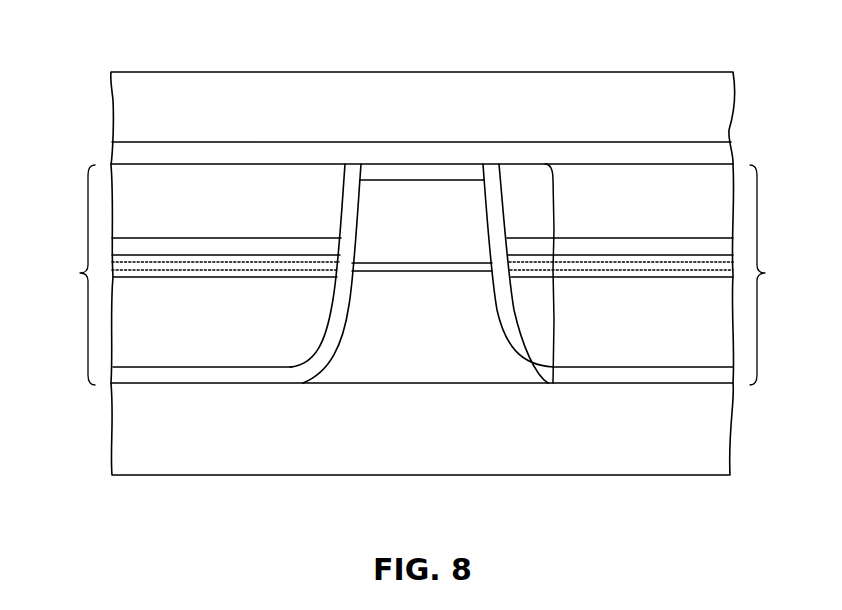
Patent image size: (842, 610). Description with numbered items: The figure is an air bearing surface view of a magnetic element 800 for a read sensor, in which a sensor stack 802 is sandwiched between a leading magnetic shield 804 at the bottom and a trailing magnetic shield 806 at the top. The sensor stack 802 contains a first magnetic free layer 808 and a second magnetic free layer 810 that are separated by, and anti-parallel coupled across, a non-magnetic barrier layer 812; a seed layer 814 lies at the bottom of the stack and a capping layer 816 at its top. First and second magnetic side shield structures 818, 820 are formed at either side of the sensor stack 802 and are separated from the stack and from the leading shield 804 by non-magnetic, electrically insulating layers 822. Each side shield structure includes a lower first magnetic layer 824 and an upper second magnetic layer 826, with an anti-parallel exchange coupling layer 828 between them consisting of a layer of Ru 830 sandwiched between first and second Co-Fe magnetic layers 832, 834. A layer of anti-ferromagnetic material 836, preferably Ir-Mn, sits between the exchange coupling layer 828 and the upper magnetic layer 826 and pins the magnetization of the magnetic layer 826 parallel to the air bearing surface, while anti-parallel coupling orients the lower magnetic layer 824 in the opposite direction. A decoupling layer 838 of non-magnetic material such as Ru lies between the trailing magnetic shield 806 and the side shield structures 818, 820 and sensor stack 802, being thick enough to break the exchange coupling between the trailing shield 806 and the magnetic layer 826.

The magnetic element 800 is at (501, 70).
The sensor stack 802 is at (559, 186).
The leading magnetic shield 804 is at (455, 430).
The trailing magnetic shield 806 is at (463, 112).
The first magnetic free layer 808 is at (459, 312).
The second magnetic free layer 810 is at (450, 220).
The non-magnetic barrier layer 812 is at (421, 266).
The seed layer 814 is at (413, 375).
The capping layer 816 is at (400, 178).
The first magnetic side shield structure 818 is at (758, 180).
The second magnetic side shield structure 820 is at (88, 175).
The non-magnetic, electrically insulating layers 822 is at (193, 375).
The first magnetic layer 824 is at (237, 322).
The second magnetic layer 826 is at (249, 192).
The anti-parallel exchange coupling layer 828 is at (180, 280).
The layer of Ru 830 is at (114, 264).
The first magnetic layer 832 is at (114, 270).
The second magnetic layer 834 is at (114, 258).
The layer of anti-ferromagnetic material 836 is at (204, 247).
The decoupling layer 838 is at (272, 152).